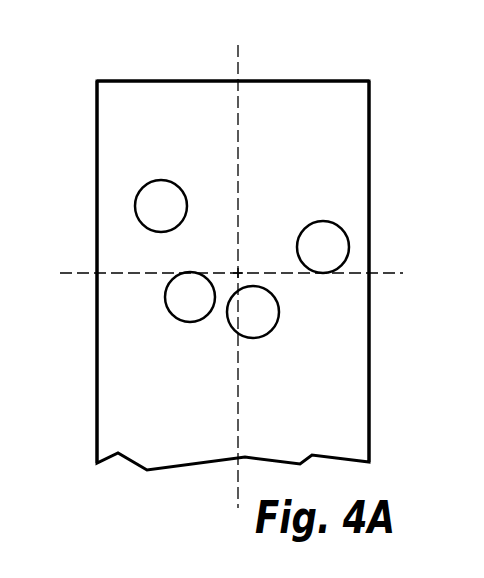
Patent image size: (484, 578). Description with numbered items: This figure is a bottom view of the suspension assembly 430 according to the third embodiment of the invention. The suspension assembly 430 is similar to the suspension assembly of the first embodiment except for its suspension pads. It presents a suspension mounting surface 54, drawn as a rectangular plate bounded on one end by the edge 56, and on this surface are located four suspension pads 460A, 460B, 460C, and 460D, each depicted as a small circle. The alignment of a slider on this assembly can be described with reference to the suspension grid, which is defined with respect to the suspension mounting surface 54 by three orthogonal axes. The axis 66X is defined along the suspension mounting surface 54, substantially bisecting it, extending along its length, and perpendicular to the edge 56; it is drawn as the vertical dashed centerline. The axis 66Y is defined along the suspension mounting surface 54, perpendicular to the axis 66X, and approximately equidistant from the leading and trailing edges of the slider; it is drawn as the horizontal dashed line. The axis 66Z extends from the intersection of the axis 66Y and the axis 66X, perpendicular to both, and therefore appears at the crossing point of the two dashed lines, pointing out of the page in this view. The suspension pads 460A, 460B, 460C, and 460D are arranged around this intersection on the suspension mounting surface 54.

The suspension assembly 430 is at (333, 82).
The suspension mounting surface 54 is at (171, 409).
The edge 56 is at (174, 81).
The axis 66x 66X is at (238, 68).
The axis 66y 66Y is at (88, 273).
The axis 66z 66Z is at (238, 273).
The suspension pad 460A is at (150, 208).
The suspension pad 460B is at (188, 306).
The suspension pad 460C is at (258, 320).
The suspension pad 460D is at (312, 242).